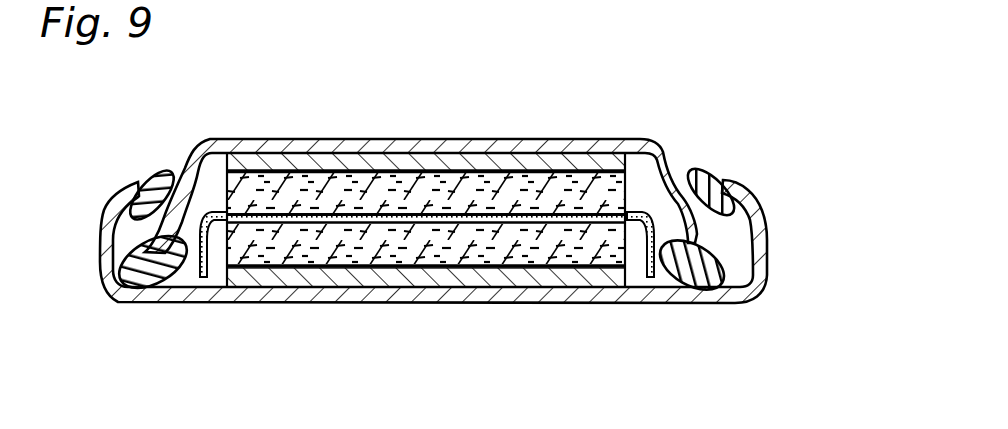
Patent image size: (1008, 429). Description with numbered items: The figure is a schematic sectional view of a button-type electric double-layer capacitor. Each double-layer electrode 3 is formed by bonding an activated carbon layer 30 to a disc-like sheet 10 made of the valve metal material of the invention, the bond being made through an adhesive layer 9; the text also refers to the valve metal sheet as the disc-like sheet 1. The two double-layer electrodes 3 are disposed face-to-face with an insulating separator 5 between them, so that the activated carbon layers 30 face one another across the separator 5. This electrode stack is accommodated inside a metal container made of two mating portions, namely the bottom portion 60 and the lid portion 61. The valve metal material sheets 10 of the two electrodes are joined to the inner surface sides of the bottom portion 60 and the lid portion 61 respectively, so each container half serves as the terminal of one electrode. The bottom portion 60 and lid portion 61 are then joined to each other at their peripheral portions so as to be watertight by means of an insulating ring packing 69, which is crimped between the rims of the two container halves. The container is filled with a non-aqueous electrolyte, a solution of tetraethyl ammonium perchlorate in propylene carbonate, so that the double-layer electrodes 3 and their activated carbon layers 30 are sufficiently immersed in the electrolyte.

The disc-like sheet 1 is at (332, 160).
The double-layer electrode 3 is at (567, 165).
The insulating separator 5 is at (383, 212).
The adhesive layer 9 is at (405, 185).
The disc-like sheet 10 is at (520, 280).
The activated carbon layer 30 is at (480, 225).
The bottom portion 60 is at (308, 305).
The lid portion 61 is at (263, 146).
The insulating ring packing 69 is at (152, 172).